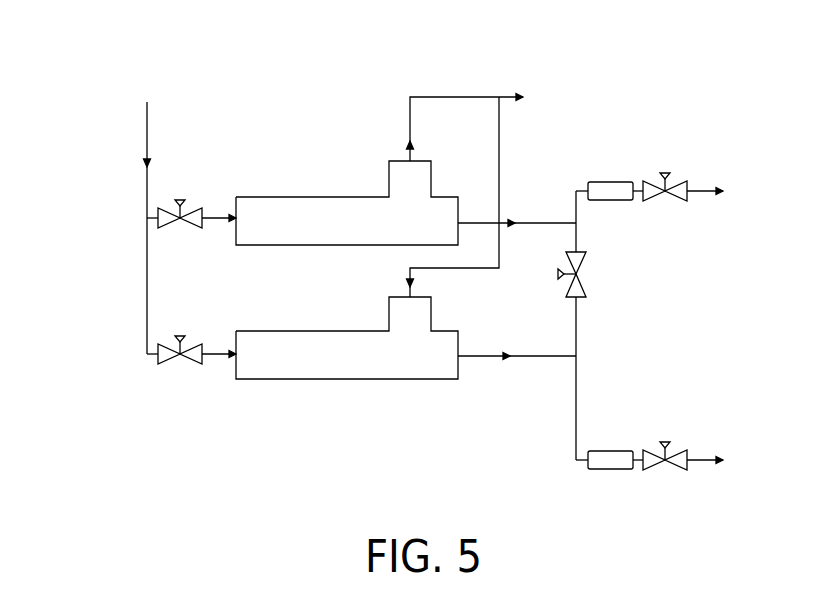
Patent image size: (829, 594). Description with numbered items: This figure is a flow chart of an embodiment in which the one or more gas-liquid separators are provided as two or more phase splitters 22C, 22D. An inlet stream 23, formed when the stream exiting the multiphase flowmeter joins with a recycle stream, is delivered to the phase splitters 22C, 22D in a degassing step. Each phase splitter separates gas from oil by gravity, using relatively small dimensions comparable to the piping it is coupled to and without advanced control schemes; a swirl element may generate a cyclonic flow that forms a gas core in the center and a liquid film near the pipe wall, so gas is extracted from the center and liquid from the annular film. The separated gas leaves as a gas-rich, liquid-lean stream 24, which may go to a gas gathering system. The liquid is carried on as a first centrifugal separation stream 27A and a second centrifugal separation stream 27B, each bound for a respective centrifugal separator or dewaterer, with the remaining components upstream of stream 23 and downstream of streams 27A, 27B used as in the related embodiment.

The phase splitter 22C is at (357, 195).
The phase splitter 22D is at (365, 382).
The inlet stream 23 is at (147, 123).
The gas-rich, liquid-lean stream 24 is at (512, 93).
The first centrifugal separation stream 27A is at (703, 187).
The second centrifugal separation stream 27B is at (702, 453).